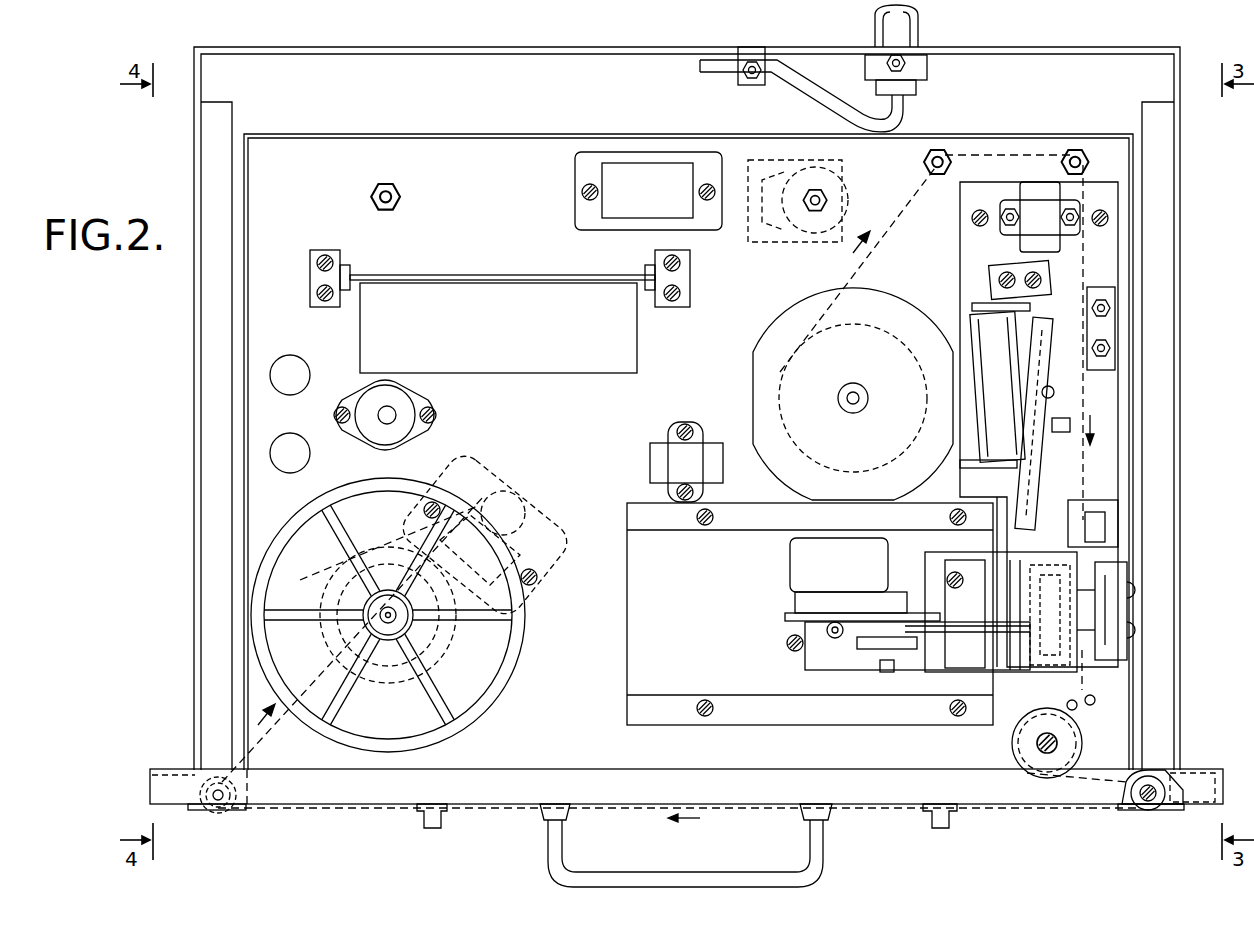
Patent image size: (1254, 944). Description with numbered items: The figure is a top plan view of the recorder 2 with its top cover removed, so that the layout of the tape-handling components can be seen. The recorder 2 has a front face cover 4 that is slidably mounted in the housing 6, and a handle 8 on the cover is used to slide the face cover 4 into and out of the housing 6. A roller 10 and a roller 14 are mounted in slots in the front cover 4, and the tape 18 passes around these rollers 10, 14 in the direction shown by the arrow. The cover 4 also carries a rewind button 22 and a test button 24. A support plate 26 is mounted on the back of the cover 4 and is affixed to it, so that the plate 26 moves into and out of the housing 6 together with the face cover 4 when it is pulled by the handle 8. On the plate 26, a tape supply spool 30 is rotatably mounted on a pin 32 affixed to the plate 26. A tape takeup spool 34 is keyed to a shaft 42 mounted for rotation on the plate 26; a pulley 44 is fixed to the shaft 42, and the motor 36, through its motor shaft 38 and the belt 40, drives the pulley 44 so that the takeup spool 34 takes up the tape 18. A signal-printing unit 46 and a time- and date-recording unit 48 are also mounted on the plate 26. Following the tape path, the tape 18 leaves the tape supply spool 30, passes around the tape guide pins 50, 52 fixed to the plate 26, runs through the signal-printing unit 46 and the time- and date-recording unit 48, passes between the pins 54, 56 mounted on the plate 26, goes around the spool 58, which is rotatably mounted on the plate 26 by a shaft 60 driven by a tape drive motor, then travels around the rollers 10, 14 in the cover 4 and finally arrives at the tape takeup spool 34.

The recorder 2 is at (1018, 820).
The front face cover 4 is at (986, 800).
The housing 6 is at (1178, 432).
The handle 8 is at (815, 857).
The roller 10 is at (1151, 808).
The roller 14 is at (218, 812).
The tape 18 is at (898, 202).
The rewind button 22 is at (432, 818).
The test button 24 is at (936, 828).
The support plate 26 is at (435, 143).
The tape supply spool 30 is at (776, 331).
The pin 32 is at (859, 396).
The tape takeup spool 34 is at (516, 662).
The motor 36 is at (496, 471).
The motor shaft 38 is at (528, 508).
The belt 40 is at (476, 586).
The shaft 42 is at (388, 623).
The pulley 44 is at (332, 587).
The signal-printing unit 46 is at (1103, 257).
The time- and date-recording unit 48 is at (664, 661).
The tape guide pin 50 is at (938, 152).
The tape guide pin 52 is at (1078, 157).
The pin 54 is at (1067, 705).
The pin 56 is at (1094, 698).
The spool 58 is at (1025, 745).
The shaft 60 is at (1060, 743).